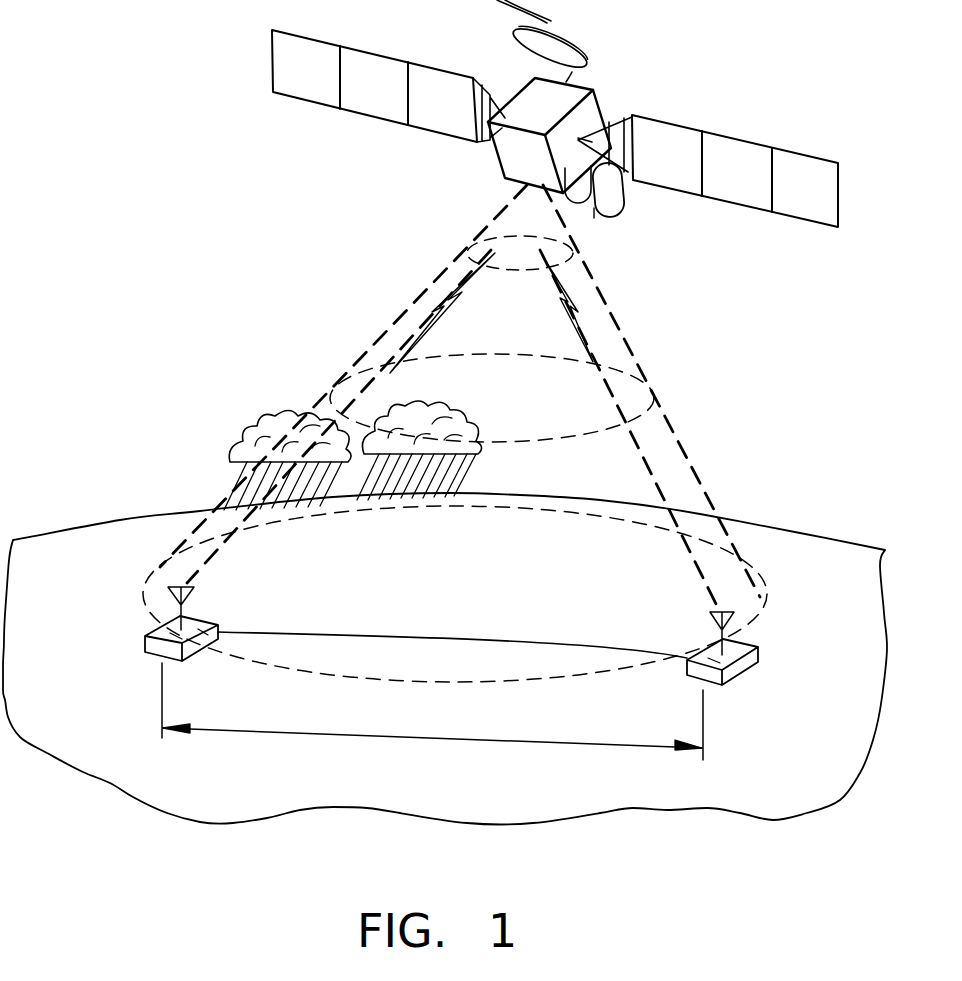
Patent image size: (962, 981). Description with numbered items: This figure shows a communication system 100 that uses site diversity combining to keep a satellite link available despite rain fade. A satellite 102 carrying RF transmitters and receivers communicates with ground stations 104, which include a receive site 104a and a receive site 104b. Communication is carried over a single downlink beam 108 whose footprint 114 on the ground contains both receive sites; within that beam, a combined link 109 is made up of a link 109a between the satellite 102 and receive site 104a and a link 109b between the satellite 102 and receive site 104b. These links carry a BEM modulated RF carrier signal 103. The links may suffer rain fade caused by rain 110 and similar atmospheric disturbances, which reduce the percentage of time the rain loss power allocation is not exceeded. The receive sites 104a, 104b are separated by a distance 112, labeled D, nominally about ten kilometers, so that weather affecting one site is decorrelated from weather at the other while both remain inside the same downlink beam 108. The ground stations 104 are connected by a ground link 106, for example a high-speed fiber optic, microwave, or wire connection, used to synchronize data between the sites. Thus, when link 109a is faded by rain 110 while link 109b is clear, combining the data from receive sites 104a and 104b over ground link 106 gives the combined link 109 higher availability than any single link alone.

The communication system 100 is at (742, 362).
The satellite 102 is at (249, 73).
The BEM modulated RF carrier signal 103 is at (540, 258).
The ground stations 104 is at (497, 646).
The receive site 104a is at (202, 620).
The receive site 104b is at (694, 676).
The ground link 106 is at (433, 637).
The downlink beam 108 is at (472, 247).
The combined link 109 is at (447, 324).
The link 109a is at (446, 311).
The link 109b is at (578, 305).
The rain 110 is at (240, 430).
The distance 112 is at (430, 742).
The footprint 114 is at (443, 680).